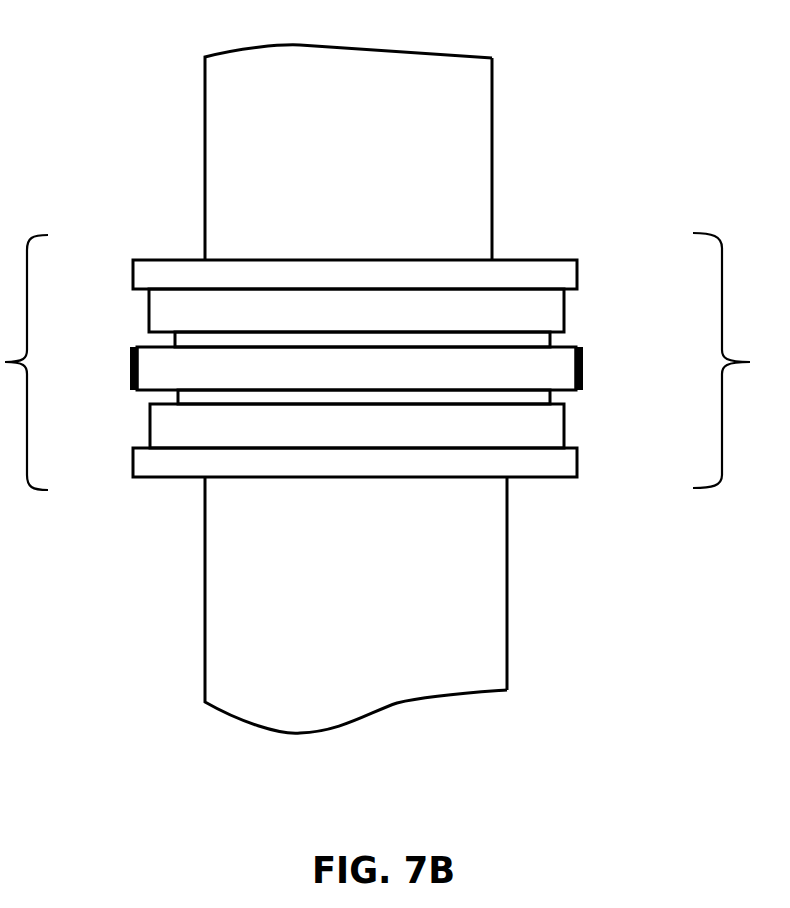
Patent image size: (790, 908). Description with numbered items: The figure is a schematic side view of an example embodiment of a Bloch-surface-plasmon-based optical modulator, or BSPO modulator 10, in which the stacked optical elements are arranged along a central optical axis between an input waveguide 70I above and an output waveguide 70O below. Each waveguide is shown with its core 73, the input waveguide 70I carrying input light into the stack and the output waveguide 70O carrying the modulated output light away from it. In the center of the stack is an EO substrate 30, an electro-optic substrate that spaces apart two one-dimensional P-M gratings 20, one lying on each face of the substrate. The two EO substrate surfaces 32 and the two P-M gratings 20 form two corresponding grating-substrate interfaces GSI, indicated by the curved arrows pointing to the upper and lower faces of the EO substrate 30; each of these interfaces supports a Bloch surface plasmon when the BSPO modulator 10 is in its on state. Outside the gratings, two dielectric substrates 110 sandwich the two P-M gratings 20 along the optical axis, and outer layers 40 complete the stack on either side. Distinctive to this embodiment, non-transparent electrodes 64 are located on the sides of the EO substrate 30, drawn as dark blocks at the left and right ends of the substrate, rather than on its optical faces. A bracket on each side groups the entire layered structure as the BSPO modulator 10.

The BSPO modulator 10 is at (397, 361).
The P-M gratings 20 is at (516, 332).
The EO substrate 30 is at (383, 378).
The EO substrate surfaces 32 is at (160, 345).
The flange 40 is at (577, 272).
The electrodes 64 is at (128, 362).
The input waveguide 70I is at (514, 145).
The output waveguide 70O is at (532, 632).
The core region 73 is at (478, 204).
The dielectric substrates 110 is at (565, 320).
The grating-substrate interfaces GSI is at (231, 402).